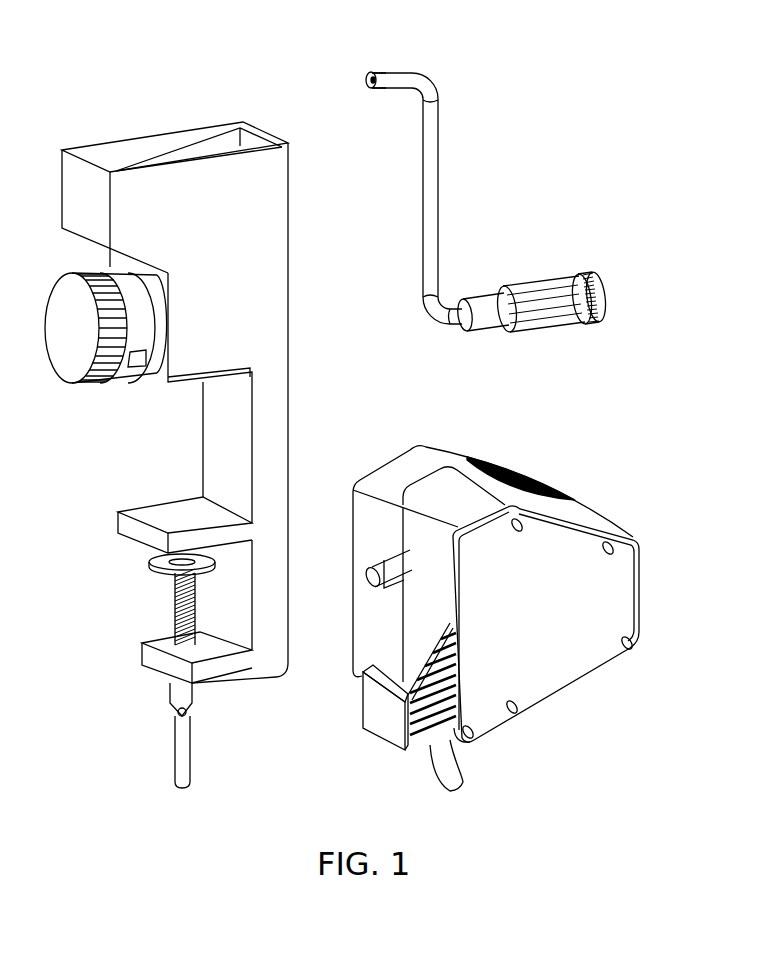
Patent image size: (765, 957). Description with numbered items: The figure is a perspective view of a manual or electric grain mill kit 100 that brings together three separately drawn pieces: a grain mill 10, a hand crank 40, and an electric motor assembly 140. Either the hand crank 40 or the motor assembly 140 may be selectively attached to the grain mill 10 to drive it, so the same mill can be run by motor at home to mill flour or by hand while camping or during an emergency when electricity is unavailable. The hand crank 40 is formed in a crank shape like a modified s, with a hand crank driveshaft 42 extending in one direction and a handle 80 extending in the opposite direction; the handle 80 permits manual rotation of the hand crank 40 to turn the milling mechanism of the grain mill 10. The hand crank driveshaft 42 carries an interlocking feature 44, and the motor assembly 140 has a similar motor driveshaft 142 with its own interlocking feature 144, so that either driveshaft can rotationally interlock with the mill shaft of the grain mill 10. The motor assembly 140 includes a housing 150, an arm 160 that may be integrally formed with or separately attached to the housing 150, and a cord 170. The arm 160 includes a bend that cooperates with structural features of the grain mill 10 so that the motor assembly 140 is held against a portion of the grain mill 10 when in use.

The grain mill kit 100 is at (226, 55).
The grain mill 10 is at (273, 305).
The hand crank 40 is at (437, 180).
The hand crank driveshaft 42 is at (387, 72).
The interlocking feature 44 is at (379, 91).
The handle 80 is at (535, 280).
The motor assembly 140 is at (551, 428).
The motor driveshaft 142 is at (389, 587).
The interlocking feature 144 is at (379, 564).
The housing 150 is at (536, 682).
The arm 160 is at (407, 757).
The cord 170 is at (450, 770).